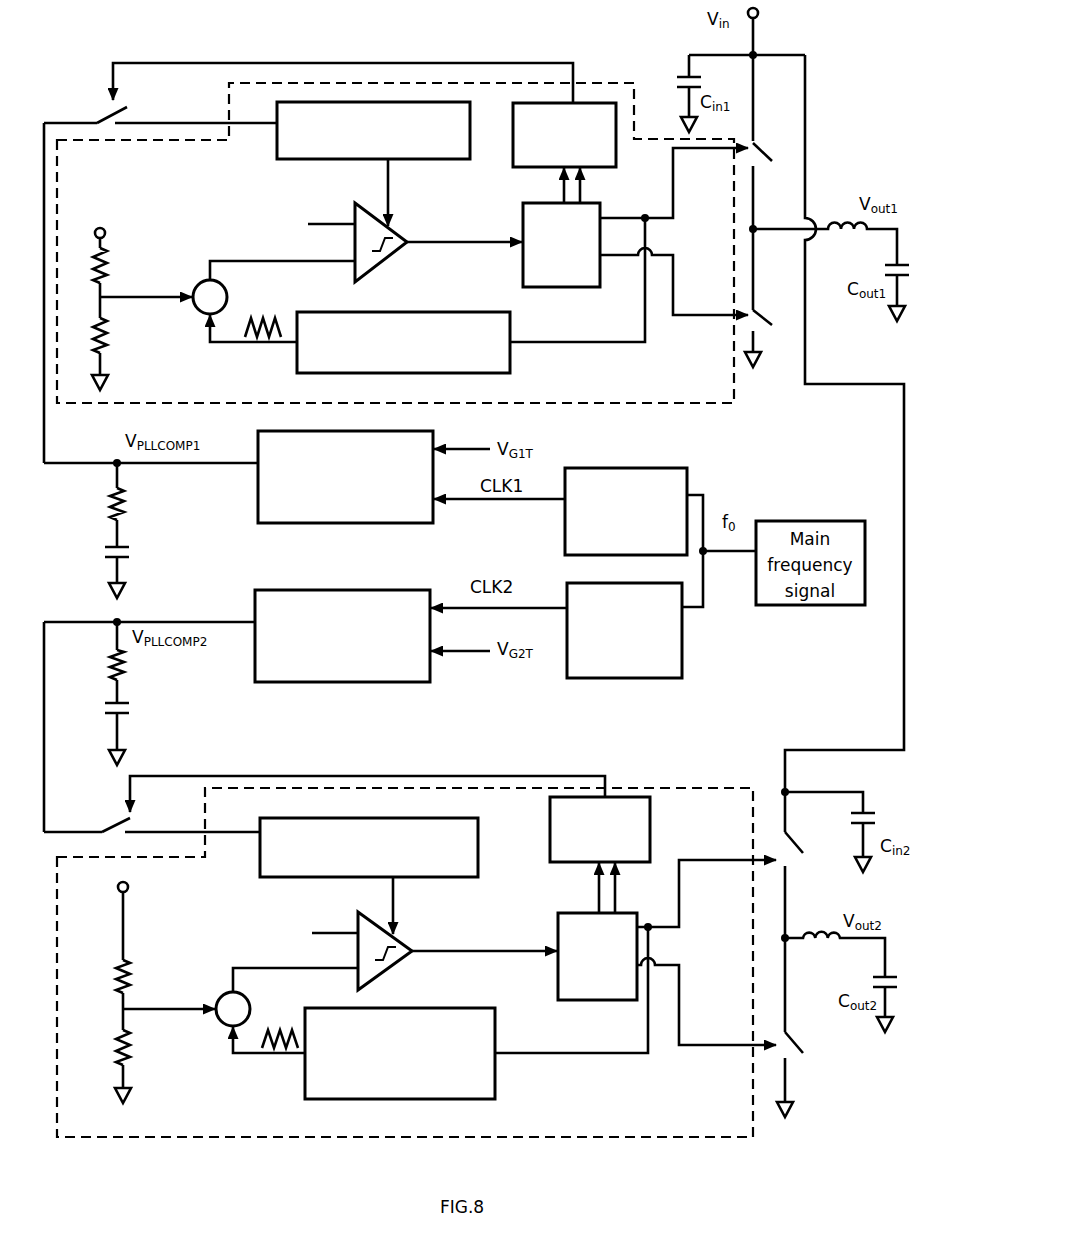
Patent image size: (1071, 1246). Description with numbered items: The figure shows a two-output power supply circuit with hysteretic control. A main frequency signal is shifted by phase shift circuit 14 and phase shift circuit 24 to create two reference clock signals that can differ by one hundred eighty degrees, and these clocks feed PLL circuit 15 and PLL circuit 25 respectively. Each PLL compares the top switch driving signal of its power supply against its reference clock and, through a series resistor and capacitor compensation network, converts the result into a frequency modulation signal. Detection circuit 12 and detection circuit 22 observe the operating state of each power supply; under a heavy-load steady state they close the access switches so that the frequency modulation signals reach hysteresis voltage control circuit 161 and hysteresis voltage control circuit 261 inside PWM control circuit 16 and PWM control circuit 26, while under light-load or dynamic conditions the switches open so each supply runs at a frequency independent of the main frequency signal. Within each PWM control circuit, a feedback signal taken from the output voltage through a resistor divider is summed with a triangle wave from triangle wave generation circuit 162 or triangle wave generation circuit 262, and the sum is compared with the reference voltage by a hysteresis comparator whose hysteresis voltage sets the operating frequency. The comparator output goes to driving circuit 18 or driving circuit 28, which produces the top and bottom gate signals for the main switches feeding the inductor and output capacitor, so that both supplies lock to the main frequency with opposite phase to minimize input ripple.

The detection circuit 12 is at (610, 159).
The phase shift circuit 14 is at (617, 549).
The PLL circuit 15 is at (409, 487).
The PWM control circuit 16 is at (724, 402).
The driving circuit 18 is at (573, 281).
The detection circuit 22 is at (646, 853).
The phase shift circuit 24 is at (616, 667).
The PLL circuit 25 is at (406, 646).
The PWM control circuit 26 is at (741, 1129).
The driving circuit 28 is at (608, 994).
The hysteresis voltage control circuit 161 is at (464, 154).
The triangle wave generation circuit 162 is at (504, 365).
The hysteresis voltage control circuit 261 is at (460, 870).
The triangle wave generation circuit 262 is at (416, 1089).